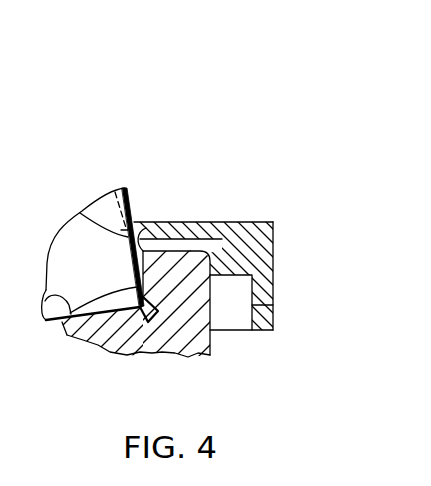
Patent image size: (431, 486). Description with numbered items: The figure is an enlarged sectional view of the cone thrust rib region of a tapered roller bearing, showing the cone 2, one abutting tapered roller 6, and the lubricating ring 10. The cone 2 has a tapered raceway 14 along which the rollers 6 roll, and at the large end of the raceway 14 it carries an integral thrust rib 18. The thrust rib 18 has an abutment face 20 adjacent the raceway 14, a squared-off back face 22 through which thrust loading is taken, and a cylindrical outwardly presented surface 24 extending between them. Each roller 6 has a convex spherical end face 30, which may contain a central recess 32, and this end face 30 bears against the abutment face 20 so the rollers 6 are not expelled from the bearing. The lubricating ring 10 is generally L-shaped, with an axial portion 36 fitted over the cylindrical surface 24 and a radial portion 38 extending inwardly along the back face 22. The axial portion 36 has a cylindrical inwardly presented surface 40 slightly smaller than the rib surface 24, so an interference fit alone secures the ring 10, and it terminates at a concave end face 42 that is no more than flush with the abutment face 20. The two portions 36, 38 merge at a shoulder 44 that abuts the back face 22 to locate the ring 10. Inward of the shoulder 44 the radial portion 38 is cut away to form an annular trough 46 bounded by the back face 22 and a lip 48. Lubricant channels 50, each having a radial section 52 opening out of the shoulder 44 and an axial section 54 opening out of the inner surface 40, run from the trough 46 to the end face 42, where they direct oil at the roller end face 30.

The cone 2 is at (111, 348).
The tapered rollers 6 is at (80, 253).
The lubricating ring 10 is at (278, 231).
The raceway 14 is at (44, 302).
The thrust rib 18 is at (168, 282).
The abutment face 20 is at (64, 333).
The back face 22 is at (214, 342).
The cylindrical outwardly presented surface 24 is at (214, 249).
The spherical end face 30 is at (131, 199).
The recess 32 is at (100, 198).
The axial portion 36 is at (212, 251).
The radial portion 38 is at (274, 279).
The cylindrical inwardly presented surface 40 is at (138, 271).
The end face 42 is at (80, 213).
The shoulder 44 is at (207, 265).
The annular trough 46 is at (223, 292).
The lip 48 is at (274, 331).
The lubricant channels 50 is at (275, 238).
The radial section 52 is at (245, 259).
The axial section 54 is at (165, 242).